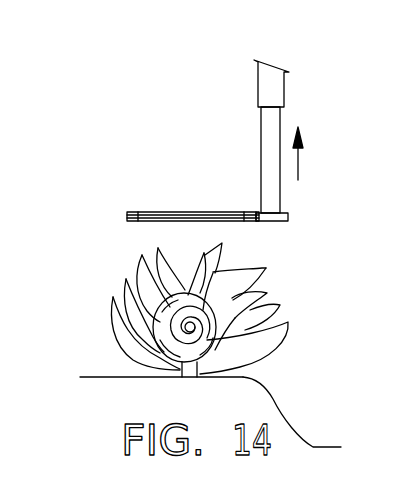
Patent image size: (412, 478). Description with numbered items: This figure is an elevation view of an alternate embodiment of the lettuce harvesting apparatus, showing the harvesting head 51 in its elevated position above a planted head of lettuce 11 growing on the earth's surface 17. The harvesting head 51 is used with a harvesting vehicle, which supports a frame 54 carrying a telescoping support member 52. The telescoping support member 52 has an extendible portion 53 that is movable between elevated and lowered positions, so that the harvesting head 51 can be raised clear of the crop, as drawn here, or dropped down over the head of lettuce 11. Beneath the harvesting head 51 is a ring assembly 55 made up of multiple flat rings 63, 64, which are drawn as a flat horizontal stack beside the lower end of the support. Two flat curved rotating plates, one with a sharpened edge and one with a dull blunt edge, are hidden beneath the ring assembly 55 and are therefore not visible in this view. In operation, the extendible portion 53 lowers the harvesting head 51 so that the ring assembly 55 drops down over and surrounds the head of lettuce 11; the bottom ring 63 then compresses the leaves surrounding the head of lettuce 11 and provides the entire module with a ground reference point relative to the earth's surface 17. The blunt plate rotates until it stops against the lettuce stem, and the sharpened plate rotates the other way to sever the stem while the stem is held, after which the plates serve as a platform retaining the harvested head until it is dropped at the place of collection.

The head of lettuce 11 is at (286, 319).
The earth's surface 17 is at (115, 377).
The harvesting head 51 is at (328, 165).
The telescoping support member 52 is at (279, 85).
The extendible portion 53 is at (264, 188).
The frame 54 is at (271, 222).
The ring assembly 55 is at (273, 427).
The bottom ring 63 is at (170, 223).
The flat ring 64 is at (162, 210).